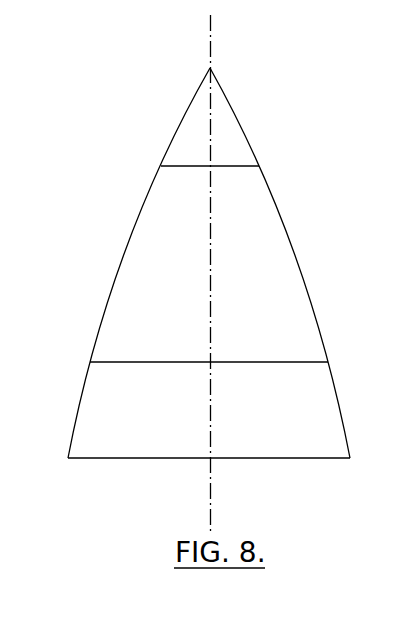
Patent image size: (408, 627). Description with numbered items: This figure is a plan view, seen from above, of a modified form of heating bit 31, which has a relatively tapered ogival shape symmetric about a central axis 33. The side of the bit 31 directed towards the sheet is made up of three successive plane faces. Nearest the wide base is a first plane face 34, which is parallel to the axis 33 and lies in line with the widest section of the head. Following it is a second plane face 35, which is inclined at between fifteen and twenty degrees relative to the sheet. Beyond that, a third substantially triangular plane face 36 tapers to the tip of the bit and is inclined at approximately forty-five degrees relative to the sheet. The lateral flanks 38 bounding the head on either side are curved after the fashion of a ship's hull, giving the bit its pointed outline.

The heating bit 31 is at (112, 458).
The axis 33 is at (211, 248).
The first plane face 34 is at (103, 400).
The second plane face 35 is at (142, 287).
The third plane face 36 is at (195, 123).
The lateral flanks 38 is at (145, 198).